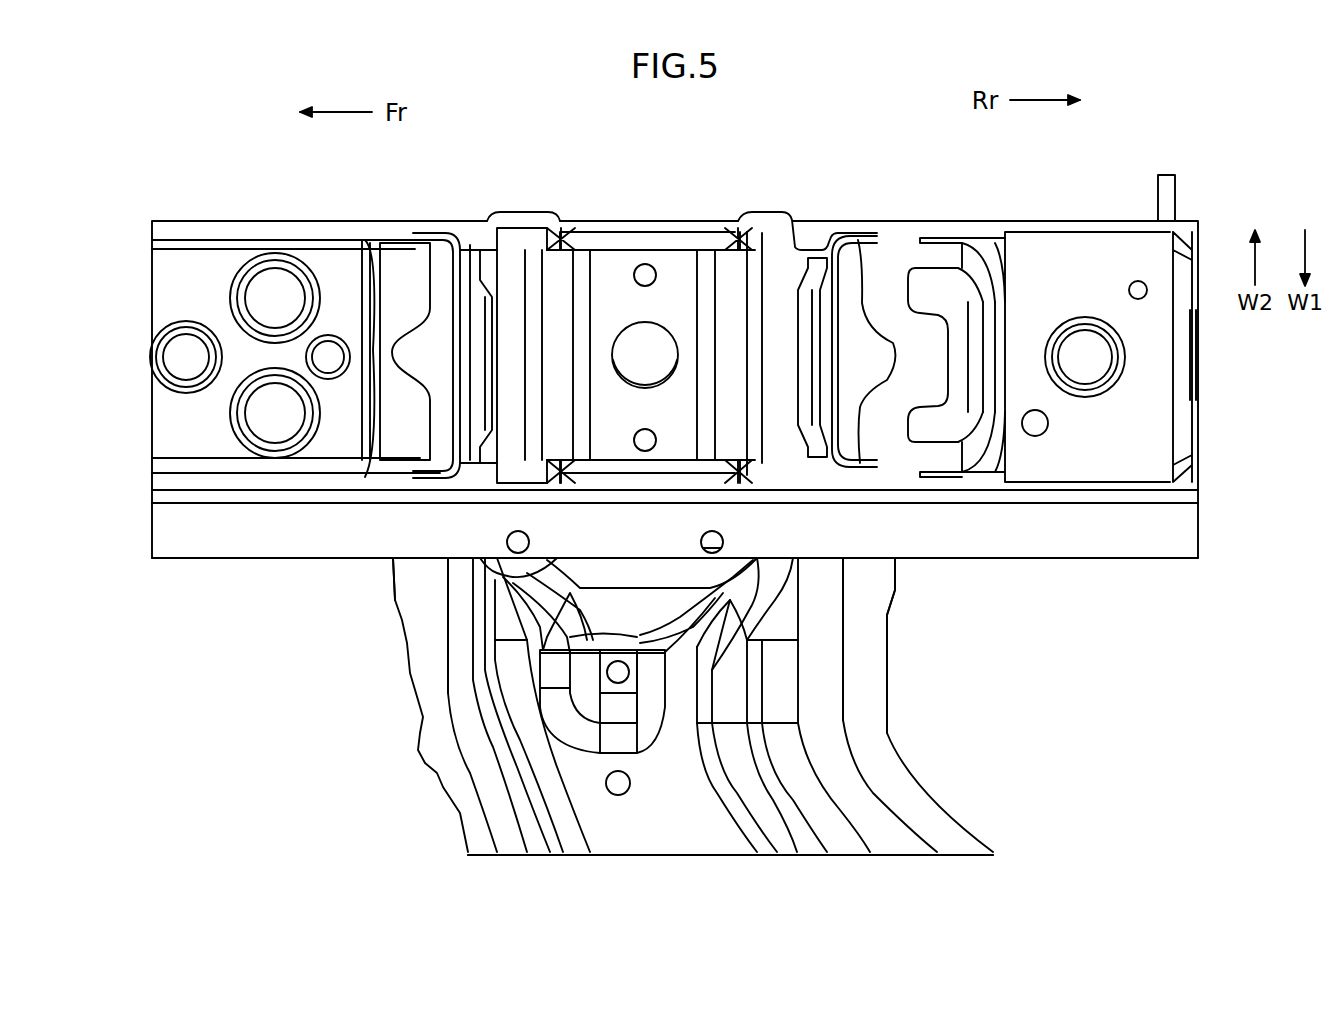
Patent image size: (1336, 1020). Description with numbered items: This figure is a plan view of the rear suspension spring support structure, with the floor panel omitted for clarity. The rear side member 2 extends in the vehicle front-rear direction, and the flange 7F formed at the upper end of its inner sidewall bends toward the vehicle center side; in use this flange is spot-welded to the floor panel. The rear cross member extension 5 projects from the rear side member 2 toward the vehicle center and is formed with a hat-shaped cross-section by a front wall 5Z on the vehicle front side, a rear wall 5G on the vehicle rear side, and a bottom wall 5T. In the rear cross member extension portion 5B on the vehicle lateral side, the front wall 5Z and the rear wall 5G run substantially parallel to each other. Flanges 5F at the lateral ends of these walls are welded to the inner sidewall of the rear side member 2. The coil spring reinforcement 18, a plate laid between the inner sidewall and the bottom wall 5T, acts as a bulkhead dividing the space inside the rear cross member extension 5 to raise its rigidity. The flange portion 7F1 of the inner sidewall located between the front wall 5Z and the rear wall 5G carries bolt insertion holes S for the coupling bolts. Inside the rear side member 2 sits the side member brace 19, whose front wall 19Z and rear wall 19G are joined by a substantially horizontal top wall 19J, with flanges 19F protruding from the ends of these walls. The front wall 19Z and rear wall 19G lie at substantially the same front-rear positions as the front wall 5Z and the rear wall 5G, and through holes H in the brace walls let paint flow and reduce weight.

The rear side member 2 is at (298, 216).
The side member brace 19 is at (645, 248).
The flange 19F is at (407, 350).
The front wall 19Z is at (476, 337).
The top wall 19J is at (610, 270).
The rear wall 19G is at (813, 317).
The through hole H is at (663, 345).
The bolt insertion hole S is at (506, 552).
The rear cross member extension 5 is at (626, 733).
The rear cross member extension portion 5B is at (366, 695).
The flange 5F is at (415, 656).
The rear wall 5G is at (825, 642).
The bottom wall 5T is at (676, 828).
The front wall 5Z is at (480, 638).
The flange 7F is at (1025, 545).
The flange portion 7F1 is at (608, 563).
The coil spring reinforcement 18 is at (635, 590).